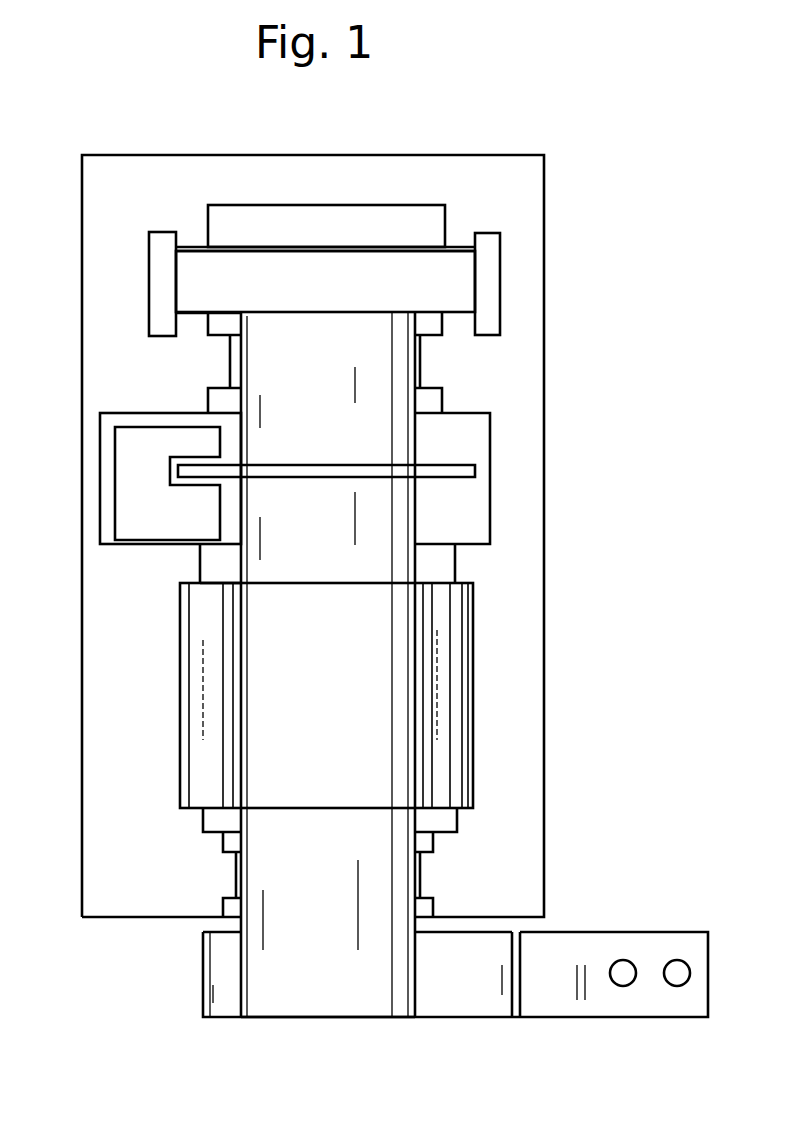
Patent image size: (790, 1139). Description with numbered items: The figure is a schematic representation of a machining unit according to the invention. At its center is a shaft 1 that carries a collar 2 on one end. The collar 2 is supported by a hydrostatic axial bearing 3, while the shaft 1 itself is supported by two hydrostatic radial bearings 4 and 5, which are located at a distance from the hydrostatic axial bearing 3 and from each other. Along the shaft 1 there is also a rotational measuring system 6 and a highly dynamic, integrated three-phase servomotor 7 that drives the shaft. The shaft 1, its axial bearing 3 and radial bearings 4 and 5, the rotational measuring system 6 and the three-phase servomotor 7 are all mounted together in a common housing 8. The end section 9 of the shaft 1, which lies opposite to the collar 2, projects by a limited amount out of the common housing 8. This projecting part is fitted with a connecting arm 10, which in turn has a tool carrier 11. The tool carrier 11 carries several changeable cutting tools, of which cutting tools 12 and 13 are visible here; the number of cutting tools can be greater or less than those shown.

The shaft 1 is at (402, 513).
The collar 2 is at (192, 276).
The hydrostatic axial bearing 3 is at (477, 237).
The hydrostatic radial bearing 4 is at (418, 362).
The hydrostatic radial bearing 5 is at (238, 873).
The rotational measuring system 6 is at (128, 497).
The three-phase servomotor 7 is at (413, 628).
The common housing 8 is at (544, 417).
The end section 9 is at (283, 990).
The connecting arm 10 is at (485, 943).
The tool carrier 11 is at (582, 950).
The cutting tool 12 is at (620, 982).
The cutting tool 13 is at (675, 983).